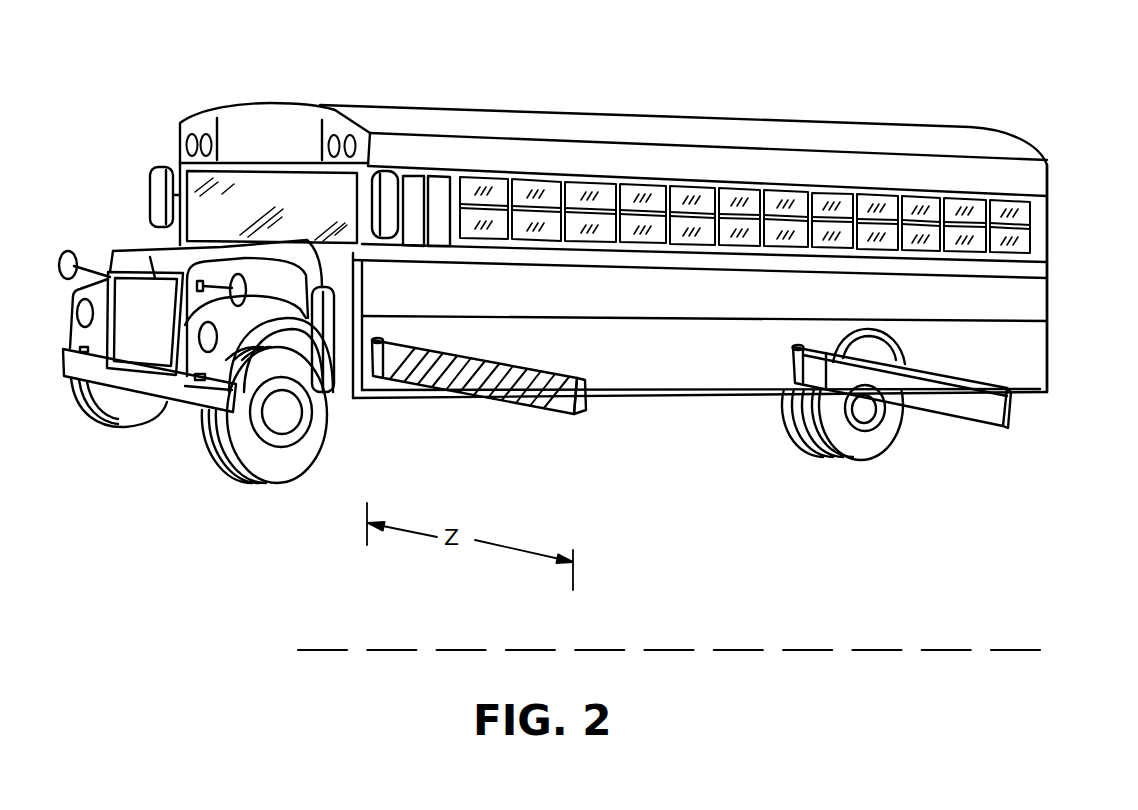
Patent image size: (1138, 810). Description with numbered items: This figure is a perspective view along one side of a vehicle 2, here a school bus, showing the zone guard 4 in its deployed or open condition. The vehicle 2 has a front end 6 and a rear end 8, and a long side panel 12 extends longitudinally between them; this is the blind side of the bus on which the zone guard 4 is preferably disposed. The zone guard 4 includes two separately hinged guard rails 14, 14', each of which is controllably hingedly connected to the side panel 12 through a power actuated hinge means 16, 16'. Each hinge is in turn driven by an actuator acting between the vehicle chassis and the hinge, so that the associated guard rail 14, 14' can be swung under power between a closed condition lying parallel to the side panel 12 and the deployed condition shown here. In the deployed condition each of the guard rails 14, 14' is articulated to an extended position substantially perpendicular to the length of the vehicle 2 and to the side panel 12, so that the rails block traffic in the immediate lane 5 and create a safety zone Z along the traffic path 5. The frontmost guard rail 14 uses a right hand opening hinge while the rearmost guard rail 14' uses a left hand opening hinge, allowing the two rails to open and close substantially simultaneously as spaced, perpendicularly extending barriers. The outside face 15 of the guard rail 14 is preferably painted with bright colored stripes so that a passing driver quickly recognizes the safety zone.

The vehicle 2 is at (643, 119).
The zone guard 4 is at (508, 400).
The immediate lane 5 is at (1038, 647).
The front end 6 is at (152, 327).
The rear end 8 is at (1047, 293).
The side panel 12 is at (752, 306).
The guard rail 14 is at (508, 395).
The guard rail 14' is at (909, 414).
The outside face 15 is at (468, 378).
The power actuated hinge means 16 is at (385, 346).
The power actuated hinge means 16' is at (808, 352).